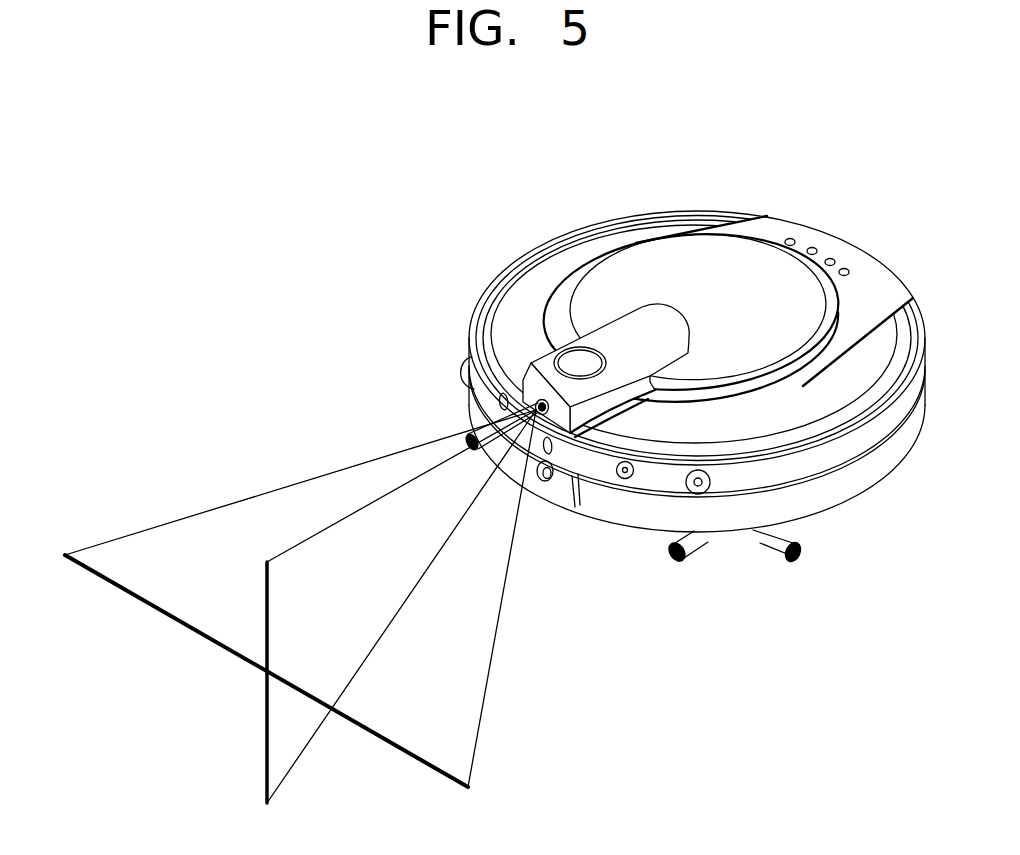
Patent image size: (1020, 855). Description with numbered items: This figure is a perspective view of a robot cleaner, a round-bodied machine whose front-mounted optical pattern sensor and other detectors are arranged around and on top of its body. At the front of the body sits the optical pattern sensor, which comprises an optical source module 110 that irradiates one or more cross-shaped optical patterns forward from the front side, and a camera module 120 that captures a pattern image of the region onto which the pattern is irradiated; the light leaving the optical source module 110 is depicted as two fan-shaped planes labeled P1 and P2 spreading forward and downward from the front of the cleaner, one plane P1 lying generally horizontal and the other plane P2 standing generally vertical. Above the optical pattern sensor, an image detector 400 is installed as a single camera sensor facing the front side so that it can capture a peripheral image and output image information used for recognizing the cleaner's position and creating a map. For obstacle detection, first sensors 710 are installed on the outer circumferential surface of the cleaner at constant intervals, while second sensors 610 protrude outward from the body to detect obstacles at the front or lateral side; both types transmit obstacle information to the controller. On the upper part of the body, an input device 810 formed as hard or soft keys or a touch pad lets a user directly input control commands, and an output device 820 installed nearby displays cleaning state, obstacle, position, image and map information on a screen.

The optical source module 110 is at (537, 405).
The camera module 120 is at (547, 480).
The image detector 400 is at (565, 362).
The second sensors 610 is at (800, 553).
The first sensors 710 is at (625, 479).
The input device 810 is at (843, 252).
The output device 820 is at (628, 318).
The first light pattern plane P1 is at (180, 627).
The second light pattern plane P2 is at (267, 733).